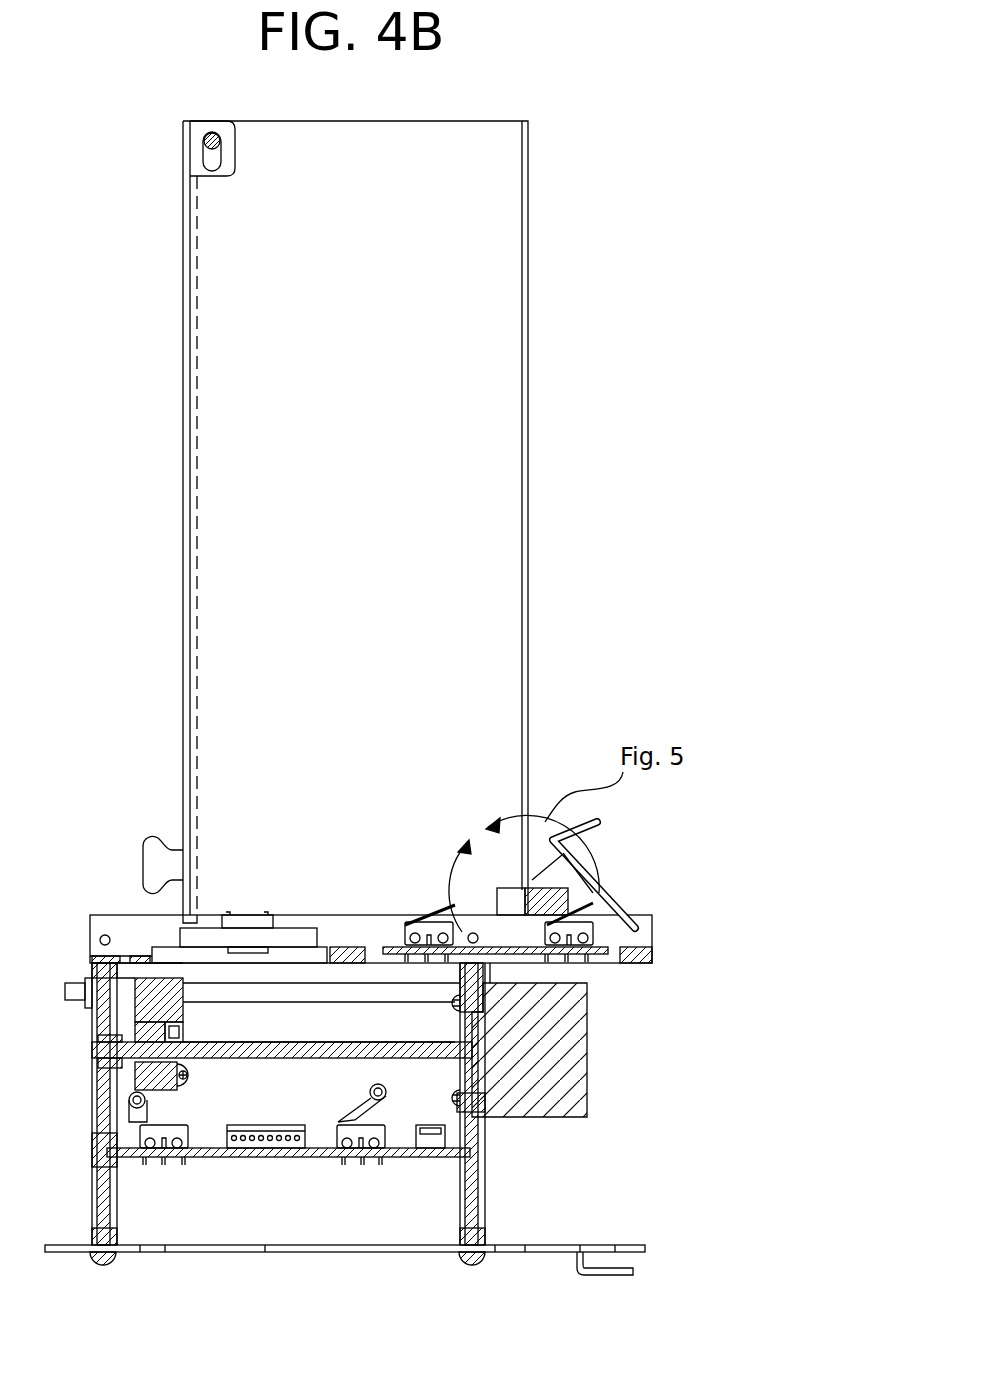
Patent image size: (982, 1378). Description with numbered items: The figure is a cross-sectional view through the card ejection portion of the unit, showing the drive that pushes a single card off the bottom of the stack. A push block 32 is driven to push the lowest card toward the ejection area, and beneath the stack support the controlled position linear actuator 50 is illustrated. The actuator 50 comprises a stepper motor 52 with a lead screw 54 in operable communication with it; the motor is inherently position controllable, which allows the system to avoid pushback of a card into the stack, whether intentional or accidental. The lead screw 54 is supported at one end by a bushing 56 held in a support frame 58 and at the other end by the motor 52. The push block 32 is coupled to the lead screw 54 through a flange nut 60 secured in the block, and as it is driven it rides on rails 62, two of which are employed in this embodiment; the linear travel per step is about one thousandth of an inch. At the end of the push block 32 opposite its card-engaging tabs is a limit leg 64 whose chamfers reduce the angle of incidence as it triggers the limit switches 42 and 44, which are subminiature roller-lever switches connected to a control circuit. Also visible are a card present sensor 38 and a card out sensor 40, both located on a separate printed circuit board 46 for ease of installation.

The push block 32 is at (143, 1005).
The card present sensor 38 is at (432, 928).
The card out sensor 40 is at (583, 918).
The limit switch 42 is at (177, 1152).
The limit switch 44 is at (378, 1152).
The printed circuit board 46 is at (505, 952).
The controlled position linear actuator 50 is at (610, 1066).
The stepper motor 52 is at (562, 1100).
The lead screw 54 is at (362, 1050).
The bushing 56 is at (100, 1063).
The support frame 58 is at (102, 1105).
The flange nut 60 is at (183, 1040).
The rails 62 is at (265, 1003).
The limit leg 64 is at (183, 1090).